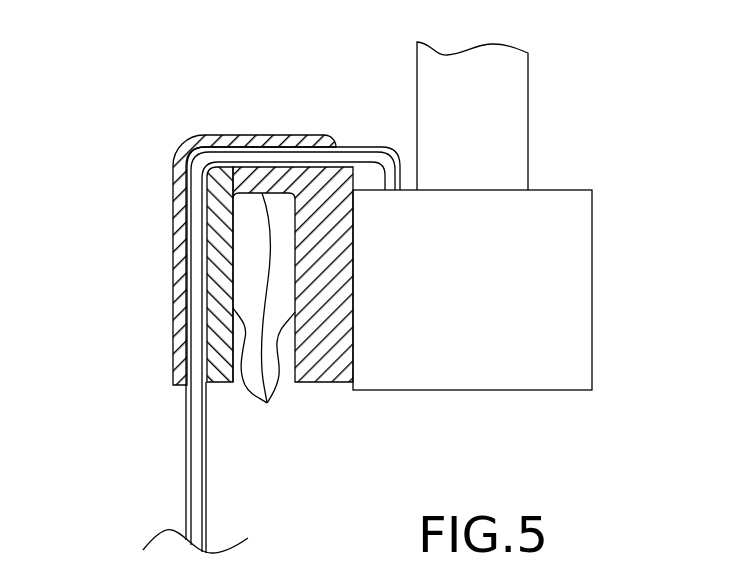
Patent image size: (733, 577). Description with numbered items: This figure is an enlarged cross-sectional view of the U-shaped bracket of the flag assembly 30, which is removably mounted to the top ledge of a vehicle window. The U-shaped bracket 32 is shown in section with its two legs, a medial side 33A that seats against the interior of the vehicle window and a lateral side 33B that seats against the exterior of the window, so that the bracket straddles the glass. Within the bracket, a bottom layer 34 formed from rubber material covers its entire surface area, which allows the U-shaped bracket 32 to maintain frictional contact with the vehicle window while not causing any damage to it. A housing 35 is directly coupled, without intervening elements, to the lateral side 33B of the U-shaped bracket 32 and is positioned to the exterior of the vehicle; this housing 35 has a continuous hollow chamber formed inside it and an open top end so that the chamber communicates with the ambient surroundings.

The flag assembly 30 is at (156, 90).
The U-shaped bracket 32 is at (210, 138).
The medial side 33A is at (172, 252).
The lateral side 33B is at (330, 360).
The bottom layer 34 is at (264, 315).
The housing 35 is at (567, 302).